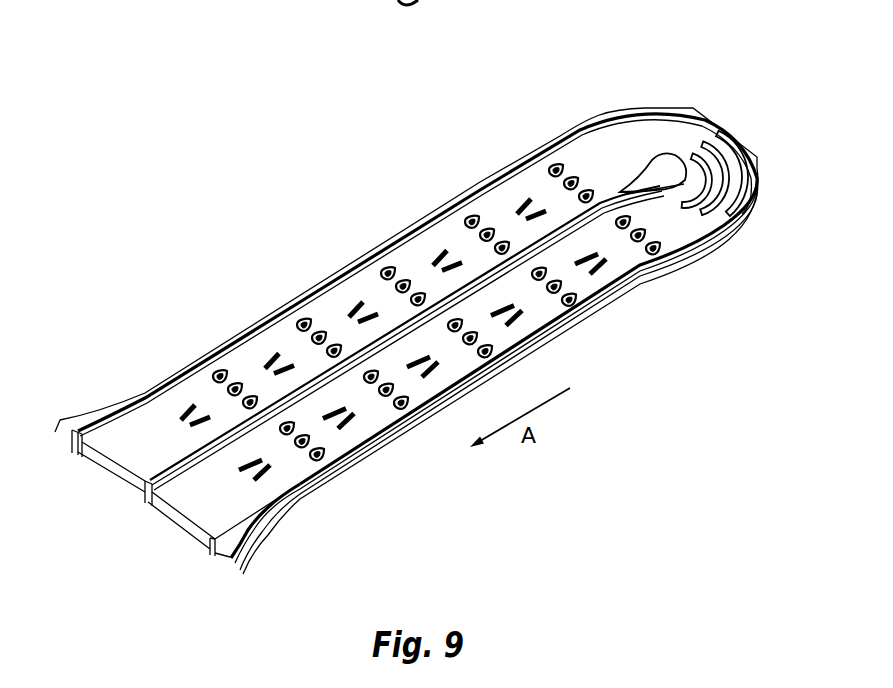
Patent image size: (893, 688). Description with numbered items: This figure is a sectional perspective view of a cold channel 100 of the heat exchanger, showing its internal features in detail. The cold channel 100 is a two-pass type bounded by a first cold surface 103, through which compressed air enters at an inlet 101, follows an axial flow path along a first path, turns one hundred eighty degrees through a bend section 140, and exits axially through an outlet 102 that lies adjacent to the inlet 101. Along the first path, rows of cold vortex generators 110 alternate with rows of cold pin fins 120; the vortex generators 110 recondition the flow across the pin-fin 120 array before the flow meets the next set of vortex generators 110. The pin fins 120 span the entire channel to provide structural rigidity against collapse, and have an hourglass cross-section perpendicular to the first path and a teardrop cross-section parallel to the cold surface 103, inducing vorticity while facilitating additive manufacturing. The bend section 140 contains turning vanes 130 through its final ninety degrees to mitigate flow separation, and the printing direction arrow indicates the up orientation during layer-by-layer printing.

The cold channel 100 is at (165, 297).
The cold channel inlet 101 is at (128, 451).
The cold channel outlet 102 is at (197, 502).
The first cold surface 103 is at (613, 276).
The cold vortex generators 110 is at (185, 410).
The cold pin fins 120 is at (222, 373).
The turning vanes 130 is at (727, 176).
The 180 degree bend section 140 is at (680, 72).